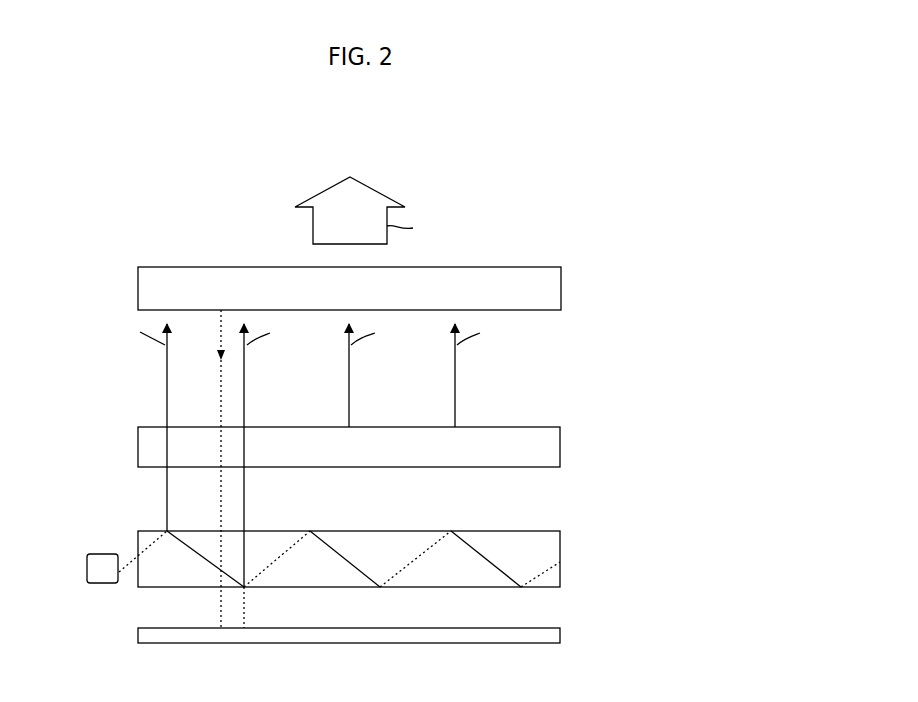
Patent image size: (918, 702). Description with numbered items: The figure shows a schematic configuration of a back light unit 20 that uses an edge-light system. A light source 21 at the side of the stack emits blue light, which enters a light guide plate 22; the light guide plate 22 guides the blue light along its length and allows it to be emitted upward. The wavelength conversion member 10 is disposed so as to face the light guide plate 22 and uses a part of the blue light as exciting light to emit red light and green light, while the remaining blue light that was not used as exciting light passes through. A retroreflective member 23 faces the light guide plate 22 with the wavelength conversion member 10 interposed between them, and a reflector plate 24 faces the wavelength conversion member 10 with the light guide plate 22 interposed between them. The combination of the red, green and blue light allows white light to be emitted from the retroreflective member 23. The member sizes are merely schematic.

The back light unit 20 is at (566, 230).
The wavelength conversion member 10 is at (562, 446).
The light source 21 is at (112, 553).
The light guide plate 22 is at (562, 547).
The retroreflective member 23 is at (562, 287).
The reflector plate 24 is at (562, 634).